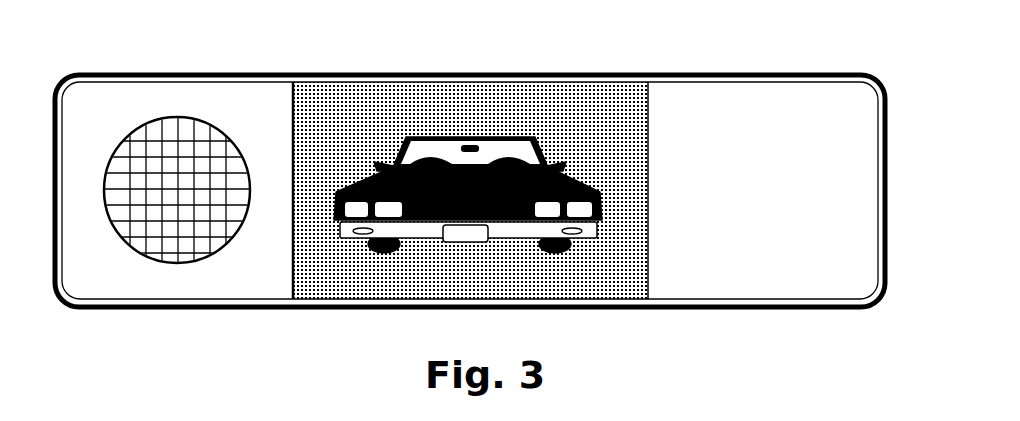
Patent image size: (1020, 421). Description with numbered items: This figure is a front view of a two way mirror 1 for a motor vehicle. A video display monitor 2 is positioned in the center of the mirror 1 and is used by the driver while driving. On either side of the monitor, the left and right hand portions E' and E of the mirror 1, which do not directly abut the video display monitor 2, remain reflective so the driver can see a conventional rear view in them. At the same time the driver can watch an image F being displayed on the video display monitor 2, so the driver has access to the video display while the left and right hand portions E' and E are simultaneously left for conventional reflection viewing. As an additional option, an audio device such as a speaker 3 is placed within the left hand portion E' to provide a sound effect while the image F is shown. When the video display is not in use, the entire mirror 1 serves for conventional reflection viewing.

The two way mirror 1 is at (880, 75).
The video display monitor 2 is at (348, 123).
The speaker 3 is at (186, 213).
The image F is at (540, 137).
The right hand portion E is at (763, 309).
The left hand portion E' is at (177, 225).